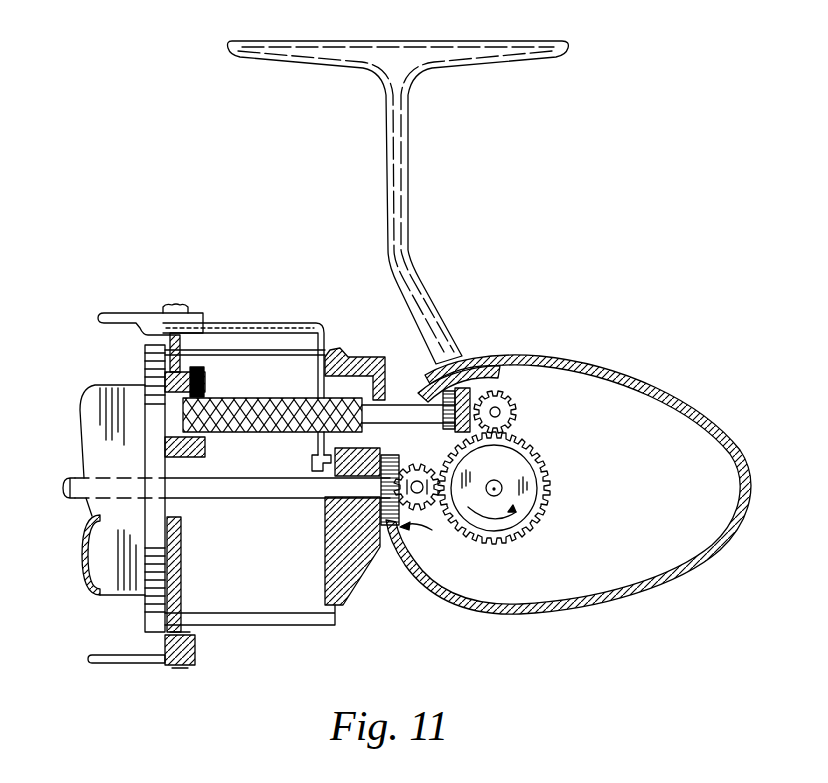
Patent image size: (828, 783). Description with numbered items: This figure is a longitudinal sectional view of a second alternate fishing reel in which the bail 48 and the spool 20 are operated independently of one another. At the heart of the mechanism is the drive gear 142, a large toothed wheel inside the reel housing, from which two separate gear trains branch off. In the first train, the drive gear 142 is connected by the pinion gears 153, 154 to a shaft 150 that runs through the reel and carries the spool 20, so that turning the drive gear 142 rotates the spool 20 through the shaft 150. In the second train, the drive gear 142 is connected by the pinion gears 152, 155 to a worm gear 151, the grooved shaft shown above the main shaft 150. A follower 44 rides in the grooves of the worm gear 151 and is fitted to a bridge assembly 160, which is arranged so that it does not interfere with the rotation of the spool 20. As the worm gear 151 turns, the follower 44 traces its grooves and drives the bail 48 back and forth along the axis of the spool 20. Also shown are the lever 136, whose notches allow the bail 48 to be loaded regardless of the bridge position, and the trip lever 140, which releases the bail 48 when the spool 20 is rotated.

The spool 20 is at (83, 418).
The follower 44 is at (197, 372).
The bail 48 is at (100, 660).
The lever 136 is at (324, 323).
The trip lever 140 is at (312, 470).
The drive gear 142 is at (552, 466).
The shaft 150 is at (229, 490).
The worm gear 151 is at (222, 398).
The pinion gear 152 is at (516, 410).
The pinion gear 153 is at (369, 522).
The pinion gear 154 is at (421, 514).
The pinion gear 155 is at (487, 368).
The bridge assembly 160 is at (185, 588).